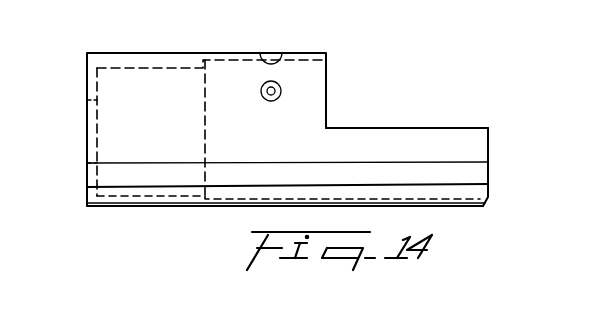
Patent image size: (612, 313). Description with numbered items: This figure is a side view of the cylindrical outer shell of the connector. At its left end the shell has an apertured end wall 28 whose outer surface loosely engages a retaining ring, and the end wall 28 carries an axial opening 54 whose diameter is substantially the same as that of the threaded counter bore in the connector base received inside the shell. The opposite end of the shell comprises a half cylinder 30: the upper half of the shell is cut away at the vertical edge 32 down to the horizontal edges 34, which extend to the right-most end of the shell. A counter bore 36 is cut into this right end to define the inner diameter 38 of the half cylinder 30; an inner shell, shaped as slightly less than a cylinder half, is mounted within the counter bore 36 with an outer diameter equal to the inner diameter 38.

The apertured end wall 28 is at (85, 72).
The half cylinder 30 is at (443, 208).
The vertical edge 32 is at (327, 80).
The horizontal edges 34 is at (418, 128).
The inner diameter 38 is at (468, 190).
The counter bore 36 is at (226, 211).
The axial opening 54 is at (96, 106).